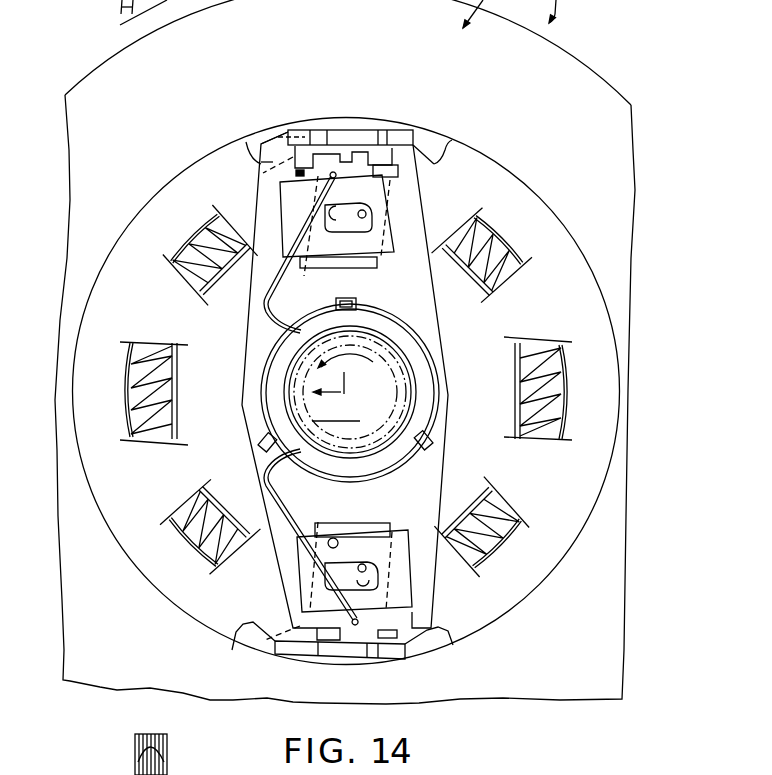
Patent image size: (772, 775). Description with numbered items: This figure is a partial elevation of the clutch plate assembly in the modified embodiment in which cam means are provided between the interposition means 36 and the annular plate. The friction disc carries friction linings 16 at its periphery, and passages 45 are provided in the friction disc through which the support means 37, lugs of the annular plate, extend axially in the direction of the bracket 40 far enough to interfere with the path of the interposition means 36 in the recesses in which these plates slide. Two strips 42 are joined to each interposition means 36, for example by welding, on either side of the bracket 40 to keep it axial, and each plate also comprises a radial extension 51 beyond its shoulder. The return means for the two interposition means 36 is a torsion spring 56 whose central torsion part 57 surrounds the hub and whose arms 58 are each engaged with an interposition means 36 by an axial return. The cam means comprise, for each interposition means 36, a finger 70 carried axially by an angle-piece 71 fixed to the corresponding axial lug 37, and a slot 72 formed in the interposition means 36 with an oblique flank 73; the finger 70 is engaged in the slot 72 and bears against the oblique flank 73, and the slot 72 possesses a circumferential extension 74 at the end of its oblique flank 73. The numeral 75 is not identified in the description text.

The friction linings 16 is at (575, 141).
The interposition means 36 is at (376, 153).
The support means 37 is at (346, 137).
The bracket 40 is at (420, 313).
The strips 42 is at (397, 238).
The passages 45 is at (438, 157).
The radial extension 51 is at (330, 148).
The torsion spring 56 is at (248, 408).
The central torsion part 57 is at (257, 374).
The arms 58 is at (280, 272).
The finger 70 is at (330, 197).
The angle-piece 71 is at (375, 170).
The slot 72 is at (355, 221).
The oblique flank 73 is at (296, 173).
The circumferential extension 74 is at (363, 213).
The bridge end 75 is at (294, 128).